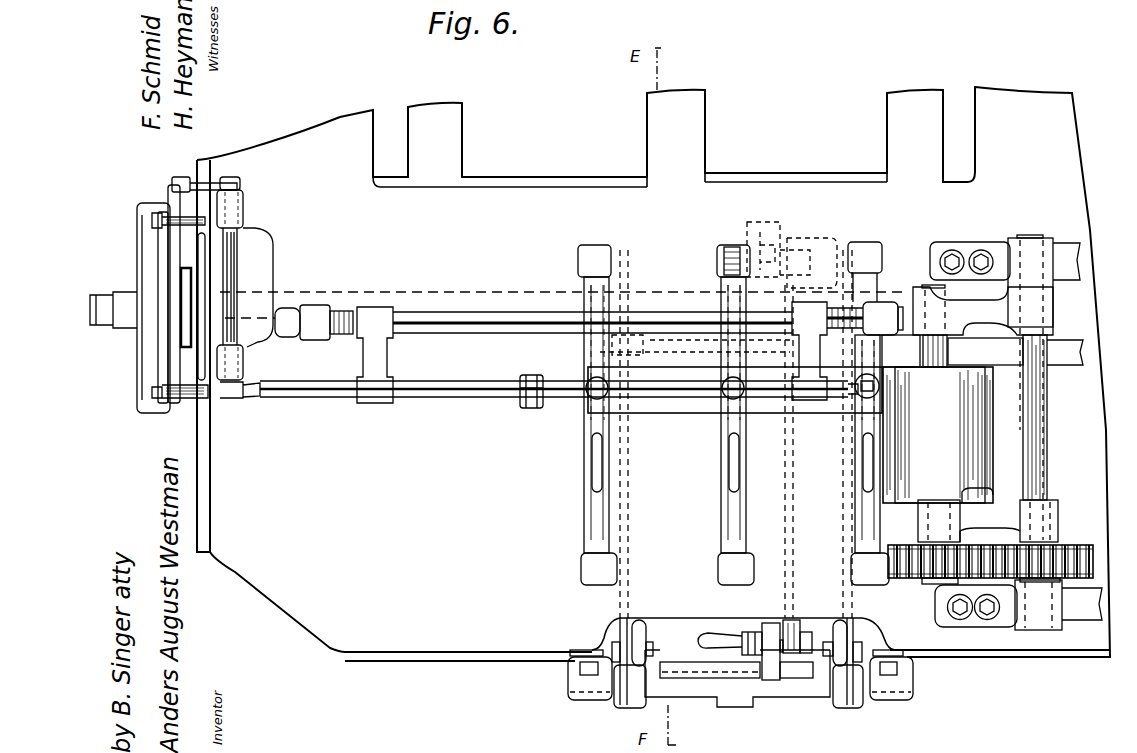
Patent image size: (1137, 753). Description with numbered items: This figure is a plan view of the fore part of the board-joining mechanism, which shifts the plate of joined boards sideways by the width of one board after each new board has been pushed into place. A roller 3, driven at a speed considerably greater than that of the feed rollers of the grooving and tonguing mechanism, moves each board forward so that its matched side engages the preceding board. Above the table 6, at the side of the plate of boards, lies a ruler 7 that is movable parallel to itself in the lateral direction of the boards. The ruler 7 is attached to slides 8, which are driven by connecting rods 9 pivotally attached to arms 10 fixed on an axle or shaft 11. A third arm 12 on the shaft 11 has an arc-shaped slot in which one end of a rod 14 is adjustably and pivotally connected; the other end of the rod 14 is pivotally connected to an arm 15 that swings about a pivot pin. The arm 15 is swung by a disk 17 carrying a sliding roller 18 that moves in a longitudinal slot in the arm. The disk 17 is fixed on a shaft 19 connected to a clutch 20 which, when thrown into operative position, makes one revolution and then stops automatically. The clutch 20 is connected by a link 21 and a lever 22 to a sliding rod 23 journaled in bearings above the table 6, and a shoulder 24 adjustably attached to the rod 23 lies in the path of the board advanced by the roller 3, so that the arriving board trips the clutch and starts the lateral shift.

The roller 3 is at (938, 435).
The table 6 is at (471, 647).
The ruler 7 is at (669, 414).
The slides 8 is at (582, 432).
The connecting rods 9 is at (843, 532).
The arms 10 is at (638, 624).
The axle or shaft 11 is at (795, 695).
The third arm 12 is at (772, 622).
The rod 14 is at (793, 483).
The arm 15 is at (765, 222).
The disk 17 is at (695, 342).
The sliding roller 18 is at (744, 242).
The shaft 19 is at (487, 290).
The clutch 20 is at (137, 213).
The link 21 is at (186, 288).
The lever 22 is at (245, 278).
The sliding rod 23 is at (428, 398).
The shoulder 24 is at (520, 396).